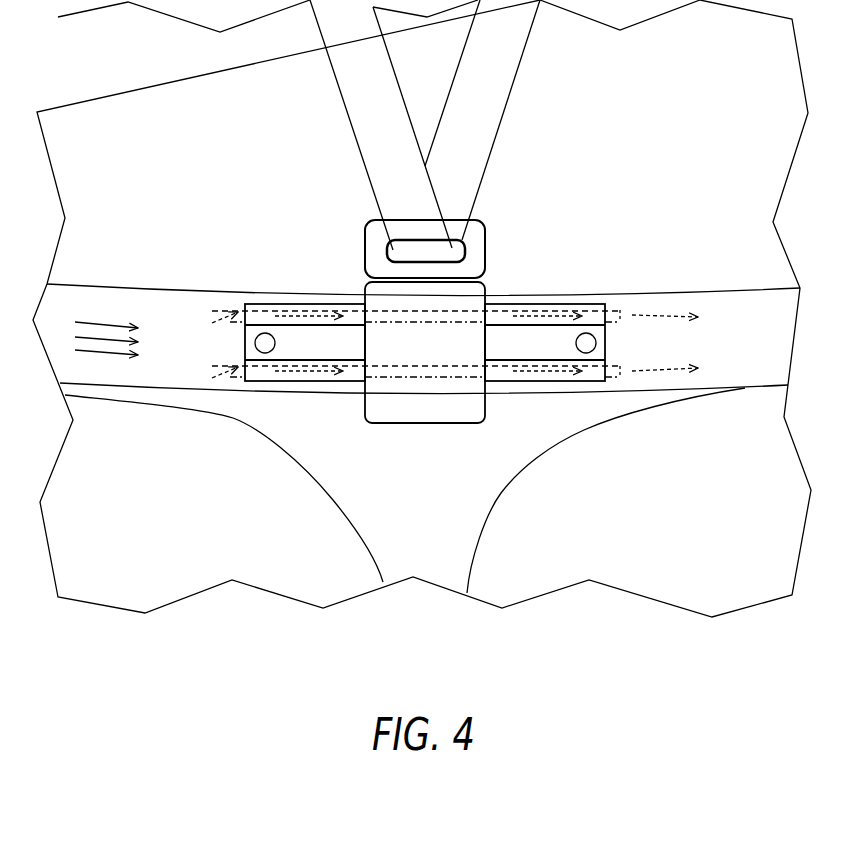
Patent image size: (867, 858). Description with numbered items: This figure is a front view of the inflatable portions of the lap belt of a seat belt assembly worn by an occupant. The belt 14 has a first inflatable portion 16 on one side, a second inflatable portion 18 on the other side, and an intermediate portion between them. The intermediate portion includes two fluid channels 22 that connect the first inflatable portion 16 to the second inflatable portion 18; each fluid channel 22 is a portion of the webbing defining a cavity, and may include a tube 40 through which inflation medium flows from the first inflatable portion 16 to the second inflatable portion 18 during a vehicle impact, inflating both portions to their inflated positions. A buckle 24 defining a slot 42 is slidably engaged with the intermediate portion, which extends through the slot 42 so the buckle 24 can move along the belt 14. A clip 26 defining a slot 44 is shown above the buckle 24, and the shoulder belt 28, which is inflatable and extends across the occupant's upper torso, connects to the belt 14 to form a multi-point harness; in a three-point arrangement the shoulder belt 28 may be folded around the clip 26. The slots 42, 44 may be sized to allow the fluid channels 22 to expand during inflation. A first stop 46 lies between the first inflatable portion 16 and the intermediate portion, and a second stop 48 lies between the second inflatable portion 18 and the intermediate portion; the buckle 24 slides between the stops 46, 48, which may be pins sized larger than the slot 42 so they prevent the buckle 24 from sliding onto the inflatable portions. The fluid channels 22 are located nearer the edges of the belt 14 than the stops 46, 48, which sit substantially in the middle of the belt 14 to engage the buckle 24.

The belt 14 is at (163, 278).
The first inflatable portion 16 is at (178, 368).
The second inflatable portion 18 is at (720, 368).
The fluid channel 22 is at (355, 315).
The buckle 24 is at (428, 415).
The clip 26 is at (370, 248).
The shoulder belt 28 is at (362, 110).
The tube 40 is at (588, 300).
The slot 42 is at (487, 347).
The slot 44 is at (468, 248).
The first stop 46 is at (254, 348).
The second stop 48 is at (596, 350).